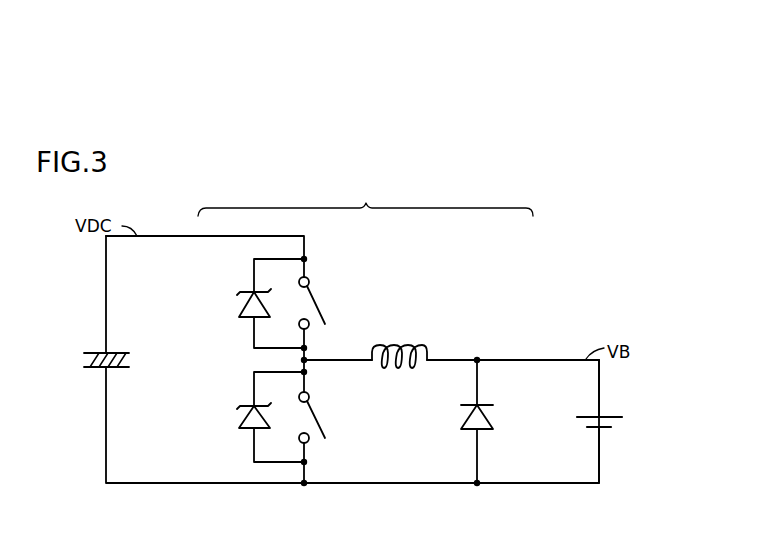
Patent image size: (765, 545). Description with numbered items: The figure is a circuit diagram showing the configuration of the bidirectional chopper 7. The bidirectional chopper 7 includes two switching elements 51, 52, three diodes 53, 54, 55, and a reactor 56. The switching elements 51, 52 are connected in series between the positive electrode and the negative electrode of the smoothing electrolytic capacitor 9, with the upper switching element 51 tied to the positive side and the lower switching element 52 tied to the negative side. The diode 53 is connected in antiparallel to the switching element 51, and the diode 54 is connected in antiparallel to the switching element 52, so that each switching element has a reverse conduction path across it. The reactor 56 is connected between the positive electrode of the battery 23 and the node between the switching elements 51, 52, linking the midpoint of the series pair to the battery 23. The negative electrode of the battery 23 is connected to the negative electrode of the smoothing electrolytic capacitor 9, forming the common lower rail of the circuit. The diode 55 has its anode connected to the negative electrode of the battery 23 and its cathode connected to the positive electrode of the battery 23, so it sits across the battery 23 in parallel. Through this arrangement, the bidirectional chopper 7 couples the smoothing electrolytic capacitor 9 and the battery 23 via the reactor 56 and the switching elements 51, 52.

The bidirectional chopper 7 is at (365, 201).
The smoothing electrolytic capacitor 9 is at (100, 353).
The battery 23 is at (612, 412).
The switching element 51 is at (318, 300).
The switching element 52 is at (318, 408).
The diode 53 is at (246, 303).
The diode 54 is at (246, 412).
The diode 55 is at (490, 417).
The reactor 56 is at (401, 345).